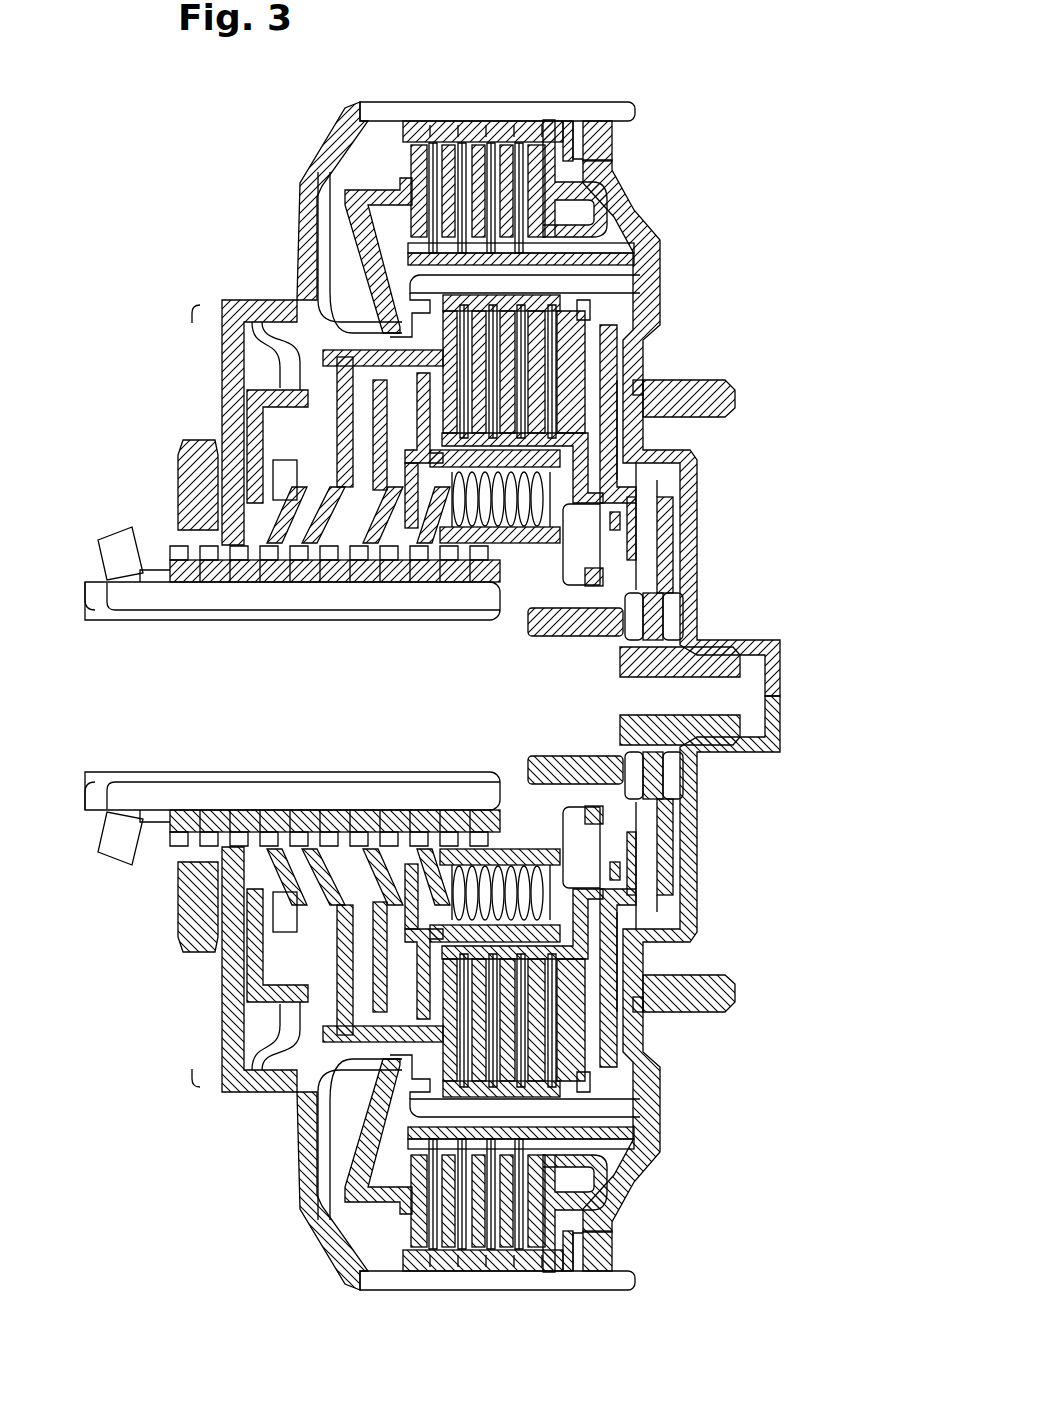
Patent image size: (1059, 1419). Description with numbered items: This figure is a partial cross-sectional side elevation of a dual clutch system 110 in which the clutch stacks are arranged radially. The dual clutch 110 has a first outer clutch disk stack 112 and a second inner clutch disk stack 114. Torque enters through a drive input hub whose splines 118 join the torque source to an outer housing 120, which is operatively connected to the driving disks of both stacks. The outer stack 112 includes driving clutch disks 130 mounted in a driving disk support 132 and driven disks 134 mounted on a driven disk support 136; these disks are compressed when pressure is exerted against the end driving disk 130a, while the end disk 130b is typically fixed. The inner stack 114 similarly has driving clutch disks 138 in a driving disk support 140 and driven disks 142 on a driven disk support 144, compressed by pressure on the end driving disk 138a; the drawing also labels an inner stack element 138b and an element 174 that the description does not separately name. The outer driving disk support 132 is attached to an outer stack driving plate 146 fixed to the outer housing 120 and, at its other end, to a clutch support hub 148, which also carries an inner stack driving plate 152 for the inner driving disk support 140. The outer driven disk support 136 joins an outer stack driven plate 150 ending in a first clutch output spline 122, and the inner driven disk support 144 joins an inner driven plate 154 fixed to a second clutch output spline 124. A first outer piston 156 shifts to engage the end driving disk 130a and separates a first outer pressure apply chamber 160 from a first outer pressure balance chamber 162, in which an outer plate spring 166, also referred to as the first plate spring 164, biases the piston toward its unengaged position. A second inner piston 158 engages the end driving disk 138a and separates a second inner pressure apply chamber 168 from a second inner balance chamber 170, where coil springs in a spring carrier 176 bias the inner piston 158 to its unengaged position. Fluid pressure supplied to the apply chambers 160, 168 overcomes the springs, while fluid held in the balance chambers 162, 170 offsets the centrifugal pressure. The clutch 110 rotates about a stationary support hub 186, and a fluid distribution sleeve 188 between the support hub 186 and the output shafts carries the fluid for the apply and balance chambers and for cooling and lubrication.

The dual clutch system 110 is at (686, 214).
The first outer clutch disk stack 112 is at (396, 163).
The second inner clutch disk stack 114 is at (588, 332).
The splines 118 is at (735, 395).
The outer housing 120 is at (652, 250).
The first clutch output spline 122 is at (712, 658).
The second clutch output spline 124 is at (700, 607).
The driving clutch disks 130 is at (495, 140).
The end driving disk 130a is at (420, 150).
The end disk 130b is at (535, 150).
The driving disk support 132 is at (400, 130).
The driven disks 134 is at (427, 187).
The driven disk support 136 is at (633, 230).
The driving clutch disks 138 is at (610, 413).
The end driving disk 138a is at (440, 325).
The clutch plate 138b is at (605, 333).
The driving disk support 140 is at (612, 293).
The driven disks 142 is at (225, 345).
The driven disk support 144 is at (637, 433).
The outer stack driving plate 146 is at (577, 103).
The clutch support hub 148 is at (148, 598).
The outer stack driven plate 150 is at (605, 372).
The inner stack driving plate 152 is at (273, 377).
The inner driven plate 154 is at (643, 533).
The first outer piston 156 is at (360, 245).
The second inner piston 158 is at (273, 437).
The first outer pressure apply chamber 160 is at (125, 592).
The first outer pressure balance chamber 162 is at (260, 485).
The first plate spring 164 is at (262, 522).
The outer plate spring 166 is at (340, 222).
The second inner pressure apply chamber 168 is at (277, 433).
The second inner pressure balance chamber 170 is at (353, 533).
The return spring 174 is at (440, 870).
The spring carrier 176 is at (637, 500).
The stationary support hub 186 is at (100, 560).
The fluid distribution sleeve 188 is at (300, 620).